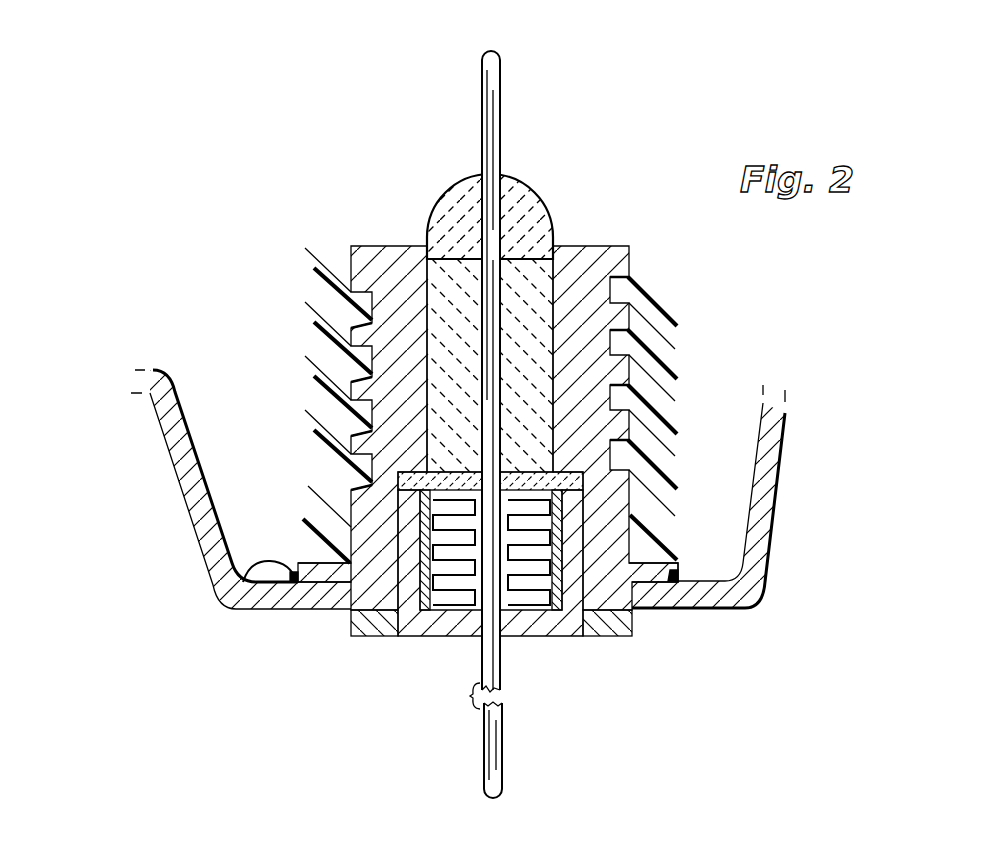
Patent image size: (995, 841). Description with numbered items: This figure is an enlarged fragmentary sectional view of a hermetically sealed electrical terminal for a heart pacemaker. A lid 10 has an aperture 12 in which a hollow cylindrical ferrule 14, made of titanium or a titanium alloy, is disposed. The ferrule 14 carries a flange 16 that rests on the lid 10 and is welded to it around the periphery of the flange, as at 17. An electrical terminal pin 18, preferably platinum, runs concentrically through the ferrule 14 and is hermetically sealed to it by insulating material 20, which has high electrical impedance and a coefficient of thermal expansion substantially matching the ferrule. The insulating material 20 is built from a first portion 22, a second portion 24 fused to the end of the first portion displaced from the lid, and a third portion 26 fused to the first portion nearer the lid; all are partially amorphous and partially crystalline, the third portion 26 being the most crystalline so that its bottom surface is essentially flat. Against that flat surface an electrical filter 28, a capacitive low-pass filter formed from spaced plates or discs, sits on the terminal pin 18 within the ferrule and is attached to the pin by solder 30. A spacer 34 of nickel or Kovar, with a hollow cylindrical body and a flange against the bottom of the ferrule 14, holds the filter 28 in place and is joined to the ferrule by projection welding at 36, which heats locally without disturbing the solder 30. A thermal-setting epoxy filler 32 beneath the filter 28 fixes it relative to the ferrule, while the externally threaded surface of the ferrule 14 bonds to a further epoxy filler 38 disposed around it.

The lid 10 is at (757, 537).
The aperture 12 is at (630, 592).
The ferrule 14 is at (610, 258).
The flange 16 is at (317, 580).
The weld 17 is at (247, 585).
The electrical terminal pin 18 is at (488, 113).
The insulating material 20 is at (567, 213).
The first portion 22 is at (525, 345).
The second portion 24 is at (445, 207).
The third portion 26 is at (565, 477).
The electrical filter 28 is at (458, 585).
The solder 30 is at (510, 602).
The filler 32 is at (543, 640).
The spacer 34 is at (385, 640).
The projection weld 36 is at (350, 608).
The filler 38 is at (660, 348).